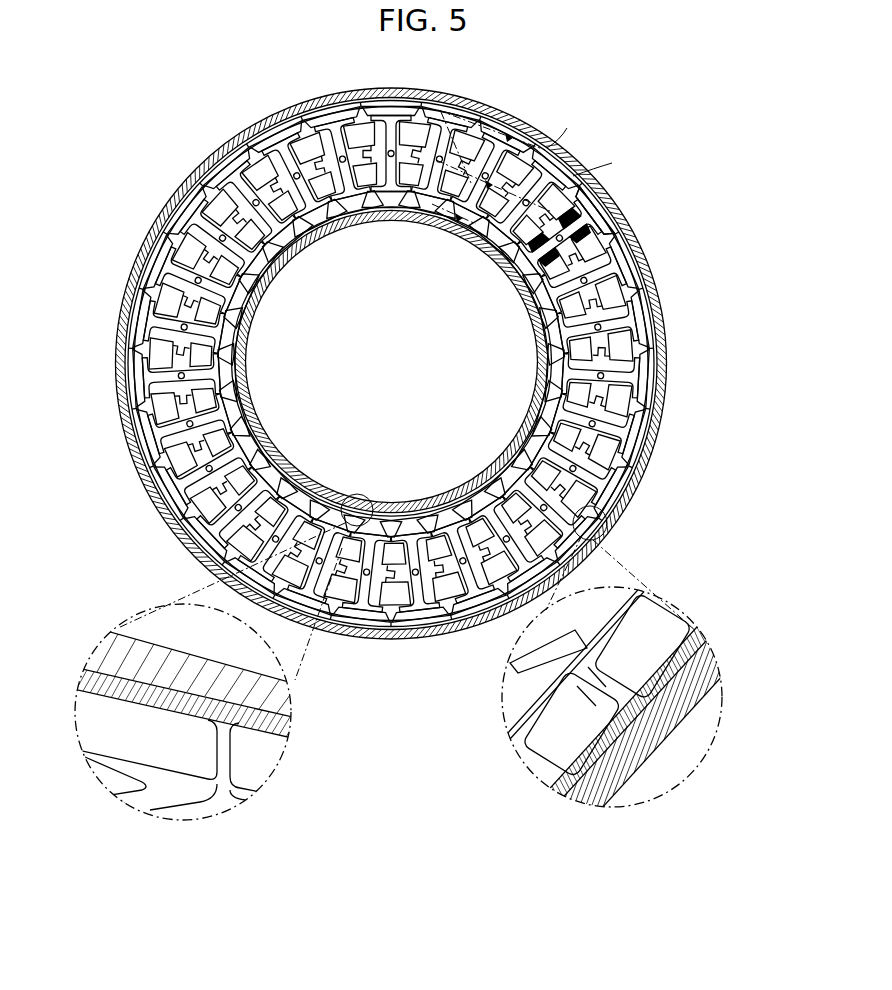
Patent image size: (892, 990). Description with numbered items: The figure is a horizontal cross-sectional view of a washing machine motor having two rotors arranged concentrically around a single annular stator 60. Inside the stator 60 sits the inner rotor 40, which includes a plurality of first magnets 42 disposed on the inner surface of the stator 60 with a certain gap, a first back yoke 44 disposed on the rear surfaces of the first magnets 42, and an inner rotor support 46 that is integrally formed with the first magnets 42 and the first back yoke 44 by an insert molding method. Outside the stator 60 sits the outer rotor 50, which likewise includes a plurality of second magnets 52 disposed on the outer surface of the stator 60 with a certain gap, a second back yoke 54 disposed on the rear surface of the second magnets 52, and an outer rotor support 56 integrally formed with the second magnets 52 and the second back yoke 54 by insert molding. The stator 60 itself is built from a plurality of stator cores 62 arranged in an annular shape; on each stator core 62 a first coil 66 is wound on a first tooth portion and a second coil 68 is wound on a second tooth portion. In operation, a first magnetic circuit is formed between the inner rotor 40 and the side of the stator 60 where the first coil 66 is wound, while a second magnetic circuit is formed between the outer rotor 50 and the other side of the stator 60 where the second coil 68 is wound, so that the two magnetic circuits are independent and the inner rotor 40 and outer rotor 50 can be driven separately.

The inner rotor 40 is at (372, 712).
The first magnets 42 is at (263, 757).
The first back yoke 44 is at (277, 728).
The inner rotor support 46 is at (282, 707).
The outer rotor 50 is at (725, 567).
The second magnets 52 is at (660, 620).
The second back yoke 54 is at (685, 640).
The outer rotor support 56 is at (693, 675).
The stator 60 is at (600, 247).
The stator cores 62 is at (541, 264).
The first coil 66 is at (535, 238).
The second coil 68 is at (603, 213).